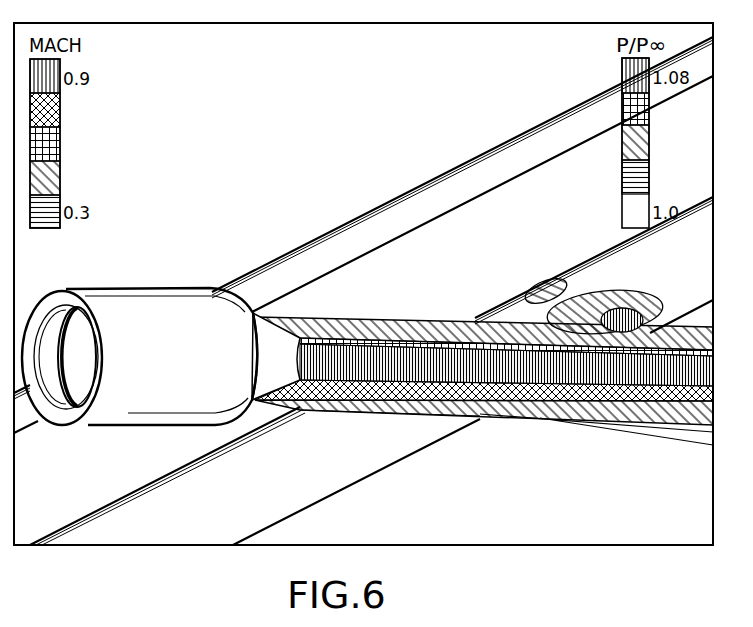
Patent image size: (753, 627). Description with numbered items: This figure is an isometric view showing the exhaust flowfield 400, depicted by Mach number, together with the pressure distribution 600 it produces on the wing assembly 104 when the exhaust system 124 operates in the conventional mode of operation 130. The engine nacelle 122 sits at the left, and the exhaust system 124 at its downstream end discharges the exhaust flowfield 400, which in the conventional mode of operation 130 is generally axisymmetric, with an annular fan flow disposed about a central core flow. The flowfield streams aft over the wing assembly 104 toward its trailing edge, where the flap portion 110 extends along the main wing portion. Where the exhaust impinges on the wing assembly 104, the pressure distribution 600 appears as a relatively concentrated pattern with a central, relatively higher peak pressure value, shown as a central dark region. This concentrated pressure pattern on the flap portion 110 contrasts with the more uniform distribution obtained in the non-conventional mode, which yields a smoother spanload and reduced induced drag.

The wing assembly 104 is at (305, 138).
The flap portion 110 is at (368, 440).
The engine nacelle 122 is at (132, 300).
The exhaust system 124 is at (348, 508).
The conventional mode of operation 130 is at (462, 433).
The exhaust flowfield 400 is at (300, 318).
The pressure distribution 600 is at (602, 283).